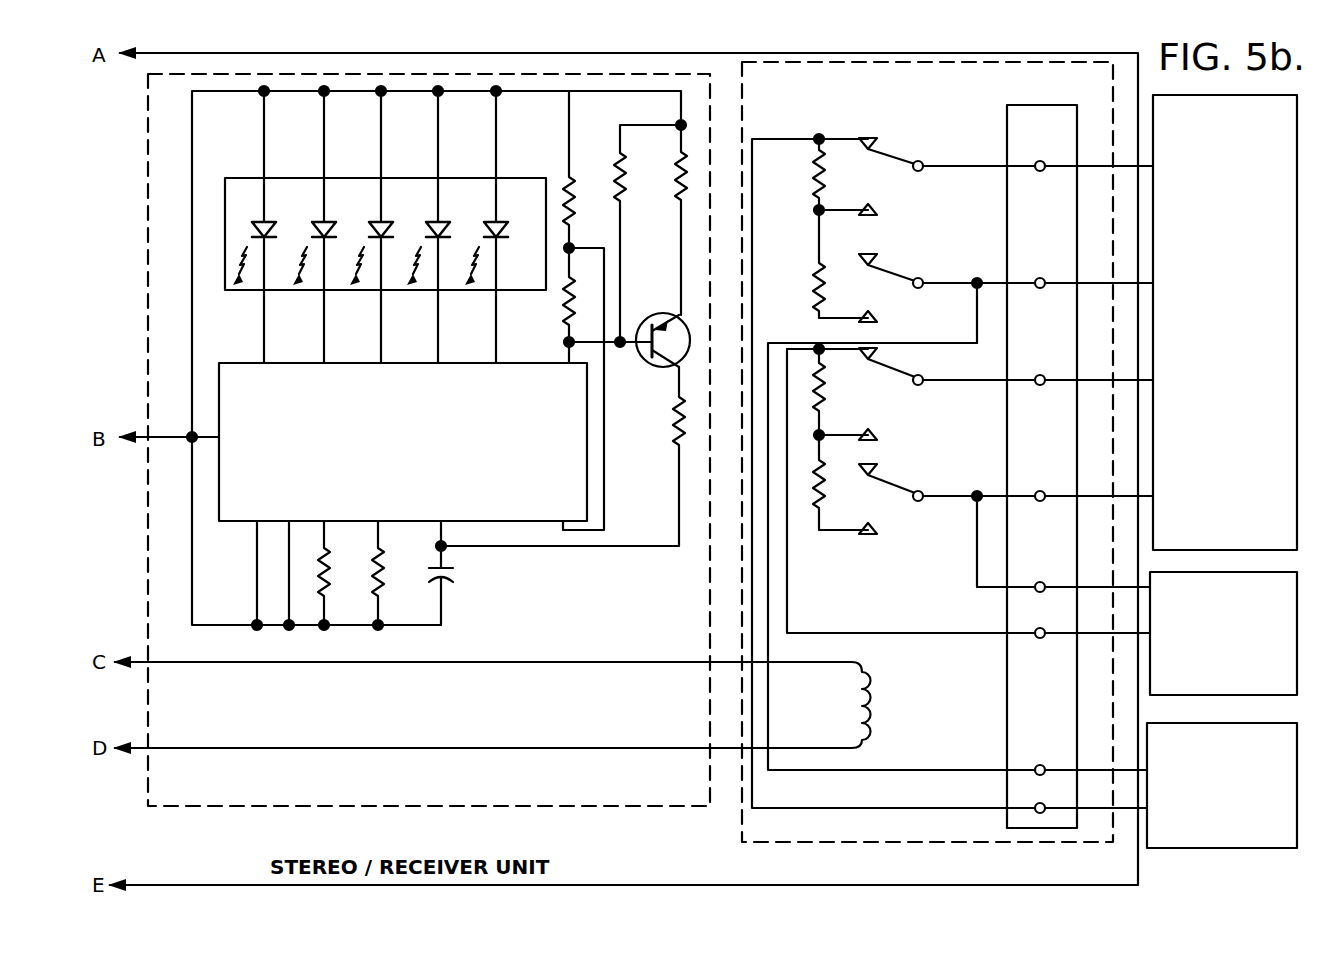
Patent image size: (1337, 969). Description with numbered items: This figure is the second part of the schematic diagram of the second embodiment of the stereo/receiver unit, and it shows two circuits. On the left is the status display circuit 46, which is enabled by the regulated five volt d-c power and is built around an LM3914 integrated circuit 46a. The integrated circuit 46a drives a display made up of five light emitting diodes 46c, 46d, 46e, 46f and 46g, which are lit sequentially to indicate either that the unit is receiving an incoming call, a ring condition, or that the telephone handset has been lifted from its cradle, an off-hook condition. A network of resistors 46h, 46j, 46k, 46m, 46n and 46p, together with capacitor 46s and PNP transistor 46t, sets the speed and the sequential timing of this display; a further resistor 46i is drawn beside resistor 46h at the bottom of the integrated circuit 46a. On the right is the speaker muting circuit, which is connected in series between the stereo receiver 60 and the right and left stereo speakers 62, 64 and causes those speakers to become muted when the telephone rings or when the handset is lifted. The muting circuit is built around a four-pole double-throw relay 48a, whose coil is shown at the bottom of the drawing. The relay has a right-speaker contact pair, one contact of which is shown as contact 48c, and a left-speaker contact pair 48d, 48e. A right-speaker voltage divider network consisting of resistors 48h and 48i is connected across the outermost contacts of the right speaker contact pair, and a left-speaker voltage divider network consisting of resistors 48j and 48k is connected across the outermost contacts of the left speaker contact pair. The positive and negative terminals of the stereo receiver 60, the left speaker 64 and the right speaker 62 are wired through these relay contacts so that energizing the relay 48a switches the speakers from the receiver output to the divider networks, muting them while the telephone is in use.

The status display circuit 46 is at (429, 440).
The LM3914 integrated circuit 46a is at (433, 522).
The light emitting diode 46c is at (268, 227).
The light emitting diode 46d is at (329, 227).
The light emitting diode 46e is at (386, 227).
The light emitting diode 46f is at (442, 227).
The light emitting diode 46g is at (500, 227).
The resistor 46h is at (331, 568).
The resistor 46i is at (385, 576).
The resistor 46j is at (567, 182).
The resistor 46k is at (566, 312).
The resistor 46m is at (616, 180).
The resistor 46n is at (679, 190).
The resistor 46p is at (678, 432).
The capacitor 46s is at (449, 581).
The PNP transistor 46t is at (651, 368).
The four-pole double-throw relay 48a is at (866, 690).
The right-speaker contact 48c is at (1006, 231).
The left-speaker contact 48d is at (1006, 441).
The left-speaker contact 48e is at (973, 574).
The resistor 48h is at (814, 190).
The resistor 48i is at (812, 290).
The resistor 48j is at (824, 406).
The resistor 48k is at (822, 503).
The stereo receiver 60 is at (1225, 322).
The right stereo speaker 62 is at (1222, 785).
The left stereo speaker 64 is at (1223, 633).